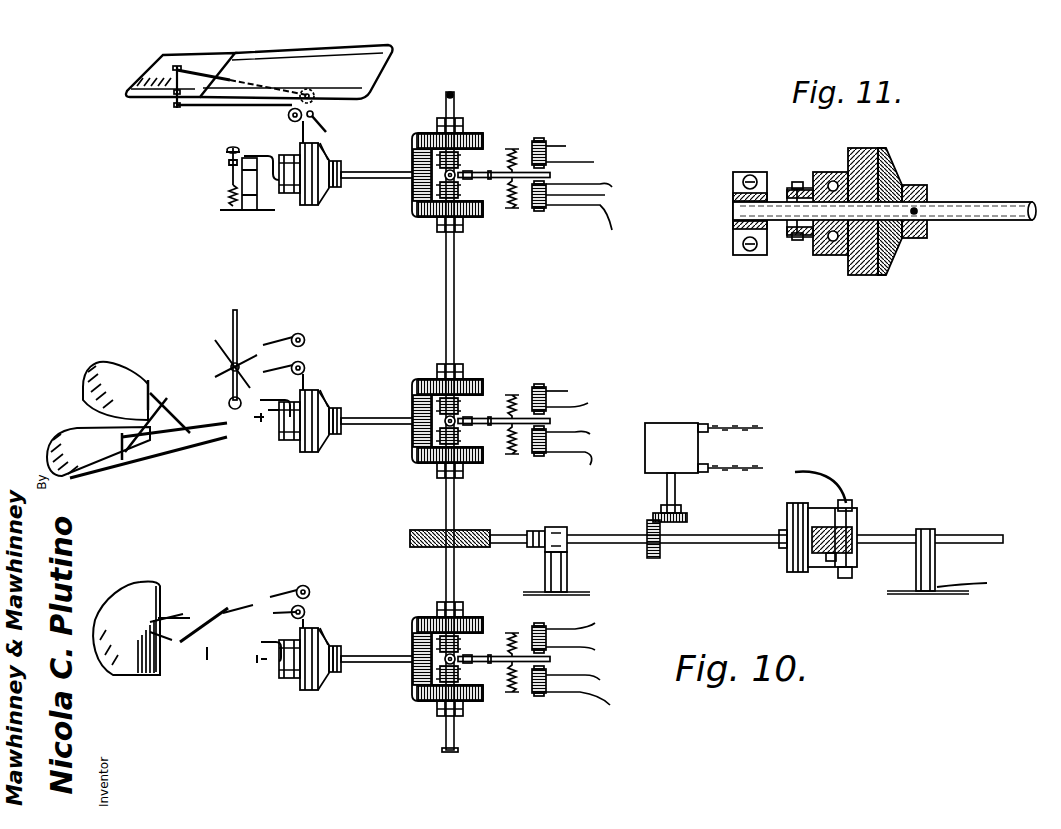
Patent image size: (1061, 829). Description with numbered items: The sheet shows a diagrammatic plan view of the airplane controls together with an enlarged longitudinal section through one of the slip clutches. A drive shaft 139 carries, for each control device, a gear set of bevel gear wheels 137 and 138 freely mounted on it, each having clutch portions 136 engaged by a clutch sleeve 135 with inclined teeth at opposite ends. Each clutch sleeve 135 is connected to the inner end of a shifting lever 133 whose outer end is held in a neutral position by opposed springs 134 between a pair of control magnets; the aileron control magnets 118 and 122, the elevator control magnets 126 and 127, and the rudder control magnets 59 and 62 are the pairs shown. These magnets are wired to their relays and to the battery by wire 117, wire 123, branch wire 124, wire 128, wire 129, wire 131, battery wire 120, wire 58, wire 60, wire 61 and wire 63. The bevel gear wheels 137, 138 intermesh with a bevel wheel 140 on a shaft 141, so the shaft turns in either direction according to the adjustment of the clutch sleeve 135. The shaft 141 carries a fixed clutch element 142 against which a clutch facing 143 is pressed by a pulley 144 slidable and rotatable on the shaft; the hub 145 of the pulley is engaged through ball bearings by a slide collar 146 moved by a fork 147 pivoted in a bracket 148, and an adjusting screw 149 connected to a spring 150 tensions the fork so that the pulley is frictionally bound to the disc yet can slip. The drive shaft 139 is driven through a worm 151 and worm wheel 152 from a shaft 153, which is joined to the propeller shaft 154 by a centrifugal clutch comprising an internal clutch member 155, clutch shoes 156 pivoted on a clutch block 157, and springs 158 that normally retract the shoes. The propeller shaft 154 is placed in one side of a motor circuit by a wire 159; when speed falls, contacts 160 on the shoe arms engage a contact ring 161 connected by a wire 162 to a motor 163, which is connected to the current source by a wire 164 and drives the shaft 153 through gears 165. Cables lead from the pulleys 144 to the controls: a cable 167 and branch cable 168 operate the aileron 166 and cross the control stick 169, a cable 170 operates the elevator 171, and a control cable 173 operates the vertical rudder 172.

In FIG. 10, the wire 58 is at (587, 677).
In FIG. 10, the rudder control magnet 59 is at (532, 700).
In FIG. 10, the wire 60 is at (591, 705).
In FIG. 10, the wire 61 is at (582, 621).
In FIG. 10, the rudder control magnet 62 is at (530, 640).
In FIG. 10, the wire 63 is at (582, 644).
In FIG. 10, the wire 117 is at (588, 159).
In FIG. 10, the aileron control magnet 118 is at (530, 140).
In FIG. 10, the battery wire 120 is at (585, 462).
In FIG. 10, the aileron control magnet 122 is at (605, 195).
In FIG. 10, the wire 123 is at (596, 186).
In FIG. 10, the branch wire 124 is at (596, 222).
In FIG. 10, the elevator control magnet 126 is at (530, 388).
In FIG. 10, the elevator control magnet 127 is at (530, 455).
In FIG. 10, the wire 128 is at (568, 391).
In FIG. 10, the wire 129 is at (566, 146).
In FIG. 10, the wire 131 is at (585, 434).
In FIG. 10, the shifting lever 133 is at (480, 179).
In FIG. 10, the opposed springs 134 is at (513, 212).
In FIG. 10, the clutch sleeve 135 is at (457, 170).
In FIG. 10, the clutch portions 136 is at (462, 152).
In FIG. 10, the bevel gear wheel 137 is at (420, 230).
In FIG. 10, the bevel gear wheel 138 is at (470, 134).
In FIG. 10, the drive shaft 139 is at (461, 90).
In FIG. 10, the bevel wheel 140 is at (415, 220).
In FIG. 10, the shaft 141 is at (385, 180).
In FIG. 11, the shaft 141 is at (1003, 225).
In FIG. 10, the clutch element 142 is at (330, 188).
In FIG. 11, the clutch element 142 is at (905, 240).
In FIG. 10, the clutch facing 143 is at (325, 391).
In FIG. 11, the clutch facing 143 is at (885, 275).
In FIG. 10, the pulley 144 is at (308, 206).
In FIG. 11, the pulley 144 is at (852, 162).
In FIG. 11, the hub 145 is at (833, 250).
In FIG. 11, the slide collar 146 is at (817, 255).
In FIG. 10, the fork 147 is at (262, 156).
In FIG. 11, the fork 147 is at (796, 240).
In FIG. 10, the bracket 148 is at (257, 200).
In FIG. 10, the adjusting screw 149 is at (230, 170).
In FIG. 10, the spring 150 is at (228, 198).
In FIG. 10, the worm 151 is at (468, 530).
In FIG. 10, the worm wheel 152 is at (527, 538).
In FIG. 10, the shaft 153 is at (607, 545).
In FIG. 10, the propeller shaft 154 is at (922, 529).
In FIG. 10, the internal clutch member 155 is at (797, 575).
In FIG. 10, the clutch shoes 156 is at (825, 570).
In FIG. 10, the clutch block 157 is at (857, 520).
In FIG. 10, the springs 158 is at (857, 558).
In FIG. 10, the wire 159 is at (987, 583).
In FIG. 10, the contacts 160 is at (850, 503).
In FIG. 10, the contact ring 161 is at (847, 578).
In FIG. 10, the wire 162 is at (795, 472).
In FIG. 10, the motor 163 is at (655, 423).
In FIG. 10, the wire 164 is at (760, 428).
In FIG. 10, the gears 165 is at (652, 527).
In FIG. 10, the aileron 166 is at (135, 99).
In FIG. 10, the cable 167 is at (195, 108).
In FIG. 10, the branch cable 168 is at (329, 126).
In FIG. 10, the control stick 169 is at (240, 315).
In FIG. 10, the cable 170 is at (270, 370).
In FIG. 10, the elevator 171 is at (50, 447).
In FIG. 10, the vertical rudder 172 is at (145, 580).
In FIG. 10, the control cable 173 is at (205, 625).